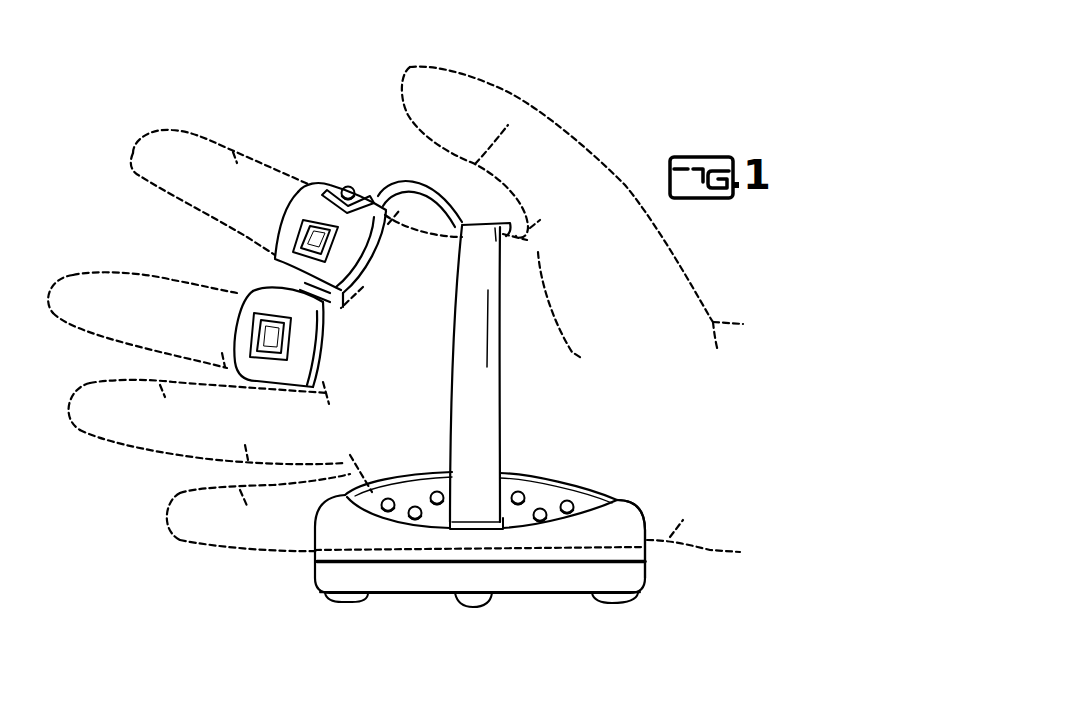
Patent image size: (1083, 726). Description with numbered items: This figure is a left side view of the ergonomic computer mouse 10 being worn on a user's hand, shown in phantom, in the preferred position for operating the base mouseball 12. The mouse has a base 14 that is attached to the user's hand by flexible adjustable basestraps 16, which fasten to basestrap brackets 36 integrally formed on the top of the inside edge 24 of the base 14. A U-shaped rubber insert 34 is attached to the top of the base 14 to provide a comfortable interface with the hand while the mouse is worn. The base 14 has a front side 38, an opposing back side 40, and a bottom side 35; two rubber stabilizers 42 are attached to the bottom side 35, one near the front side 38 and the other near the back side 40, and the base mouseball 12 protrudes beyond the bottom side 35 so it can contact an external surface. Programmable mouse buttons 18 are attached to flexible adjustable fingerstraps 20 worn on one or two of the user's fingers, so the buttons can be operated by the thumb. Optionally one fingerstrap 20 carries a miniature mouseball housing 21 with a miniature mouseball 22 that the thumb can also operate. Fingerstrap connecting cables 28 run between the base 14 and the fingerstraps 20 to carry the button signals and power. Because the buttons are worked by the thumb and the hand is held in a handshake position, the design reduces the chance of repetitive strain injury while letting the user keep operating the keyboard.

The ergonomic computer mouse 10 is at (321, 88).
The base mouseball 12 is at (467, 597).
The base 14 is at (335, 578).
The flexible adjustable basestraps 16 is at (480, 403).
The mouse buttons 18 is at (270, 325).
The flexible adjustable fingerstraps 20 is at (352, 247).
The miniature mouseball housing 21 is at (335, 190).
The miniature mouseball 22 is at (352, 187).
The inside edge 24 is at (505, 580).
The fingerstrap connecting cables 28 is at (427, 182).
The rubber insert 34 is at (537, 495).
The bottom side 35 is at (566, 600).
The basestrap brackets 36 is at (505, 528).
The front side 38 is at (313, 568).
The back side 40 is at (648, 528).
The stabilizers 42 is at (362, 600).